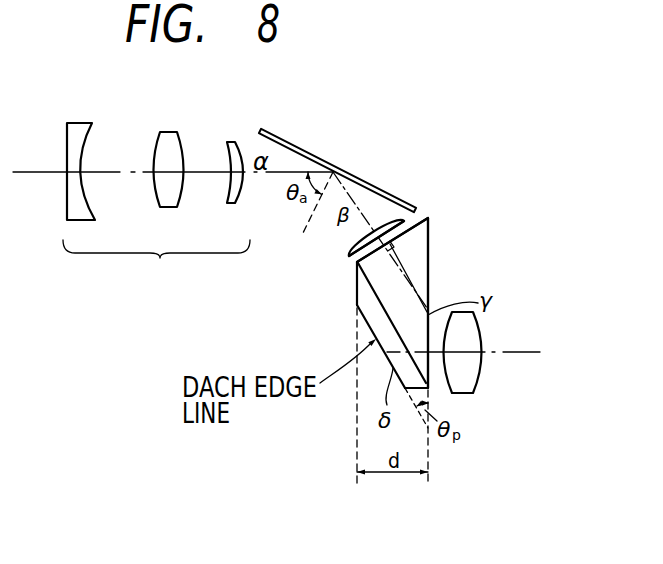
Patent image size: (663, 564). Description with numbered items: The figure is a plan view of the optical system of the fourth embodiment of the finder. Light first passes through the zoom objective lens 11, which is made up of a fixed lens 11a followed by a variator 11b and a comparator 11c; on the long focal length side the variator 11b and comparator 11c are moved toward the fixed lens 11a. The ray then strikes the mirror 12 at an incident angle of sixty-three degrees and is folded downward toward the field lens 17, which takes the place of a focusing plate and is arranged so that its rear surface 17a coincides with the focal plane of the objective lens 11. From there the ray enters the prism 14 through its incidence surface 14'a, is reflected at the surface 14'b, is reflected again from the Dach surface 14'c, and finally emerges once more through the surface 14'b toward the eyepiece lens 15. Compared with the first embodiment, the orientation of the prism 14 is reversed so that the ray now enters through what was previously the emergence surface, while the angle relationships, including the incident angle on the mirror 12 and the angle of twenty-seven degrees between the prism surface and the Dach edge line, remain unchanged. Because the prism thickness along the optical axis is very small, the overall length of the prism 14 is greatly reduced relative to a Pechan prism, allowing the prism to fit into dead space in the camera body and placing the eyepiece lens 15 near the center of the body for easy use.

The objective lens 11 is at (160, 184).
The fixed lens 11a is at (77, 132).
The variator 11b is at (168, 137).
The comparator 11c is at (236, 140).
The mirror 12 is at (322, 160).
The prism 14 is at (392, 282).
The incidence surface 14'a is at (442, 248).
The reflecting and emergence surface 14'b is at (478, 301).
The Dach surface 14'c is at (331, 346).
The eyepiece lens 15 is at (479, 373).
The field lens 17 is at (350, 250).
The rear surface 17a is at (355, 260).